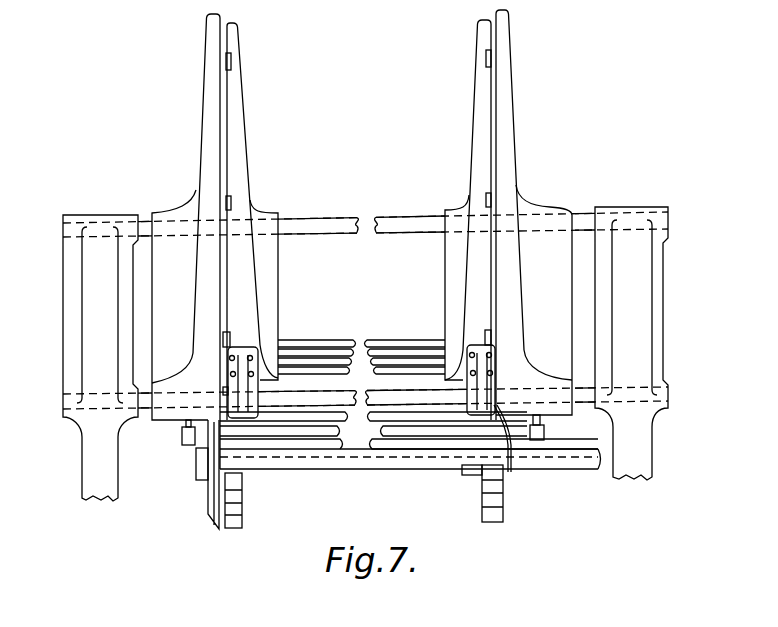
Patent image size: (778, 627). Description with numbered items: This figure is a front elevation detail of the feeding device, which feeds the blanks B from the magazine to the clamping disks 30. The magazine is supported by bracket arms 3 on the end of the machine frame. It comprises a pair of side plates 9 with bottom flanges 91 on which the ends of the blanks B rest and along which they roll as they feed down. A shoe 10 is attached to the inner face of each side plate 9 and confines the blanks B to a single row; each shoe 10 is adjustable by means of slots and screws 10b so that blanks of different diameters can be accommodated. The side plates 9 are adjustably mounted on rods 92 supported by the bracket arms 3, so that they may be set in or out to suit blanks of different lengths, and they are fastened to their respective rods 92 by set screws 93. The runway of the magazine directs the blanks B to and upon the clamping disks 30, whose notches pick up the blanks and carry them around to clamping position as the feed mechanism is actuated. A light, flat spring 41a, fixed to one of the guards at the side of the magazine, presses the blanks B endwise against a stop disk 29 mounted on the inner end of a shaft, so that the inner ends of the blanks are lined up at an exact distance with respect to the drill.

The bracket arms 3 is at (115, 476).
The side plates 9 is at (203, 68).
The shoe 10 is at (233, 80).
The screws 10b is at (486, 52).
The rods 92 is at (340, 219).
The blanks B is at (339, 372).
The bottom flanges 91 is at (265, 402).
The set screws 93 is at (545, 436).
The flat spring 41a is at (512, 466).
The stop disk 29 is at (208, 518).
The clamping disks 30 is at (236, 528).